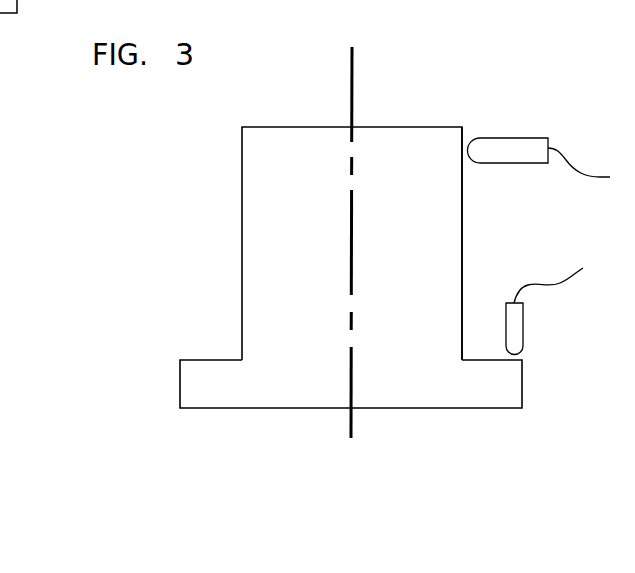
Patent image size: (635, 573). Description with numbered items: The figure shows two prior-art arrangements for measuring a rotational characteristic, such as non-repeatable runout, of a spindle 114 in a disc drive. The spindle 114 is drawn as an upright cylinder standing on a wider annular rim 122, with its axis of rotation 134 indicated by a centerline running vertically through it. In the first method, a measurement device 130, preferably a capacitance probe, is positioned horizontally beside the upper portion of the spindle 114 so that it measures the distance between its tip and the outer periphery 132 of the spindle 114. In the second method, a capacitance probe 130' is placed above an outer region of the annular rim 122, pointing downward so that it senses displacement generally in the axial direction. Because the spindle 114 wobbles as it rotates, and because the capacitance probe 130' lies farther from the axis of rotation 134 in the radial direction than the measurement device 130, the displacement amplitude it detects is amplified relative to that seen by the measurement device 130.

The spindle 114 is at (298, 120).
The annular rim 122 is at (180, 393).
The measurement device 130 is at (538, 127).
The capacitance probe 130' is at (550, 311).
The outer periphery 132 is at (462, 247).
The axis of rotation 134 is at (352, 90).